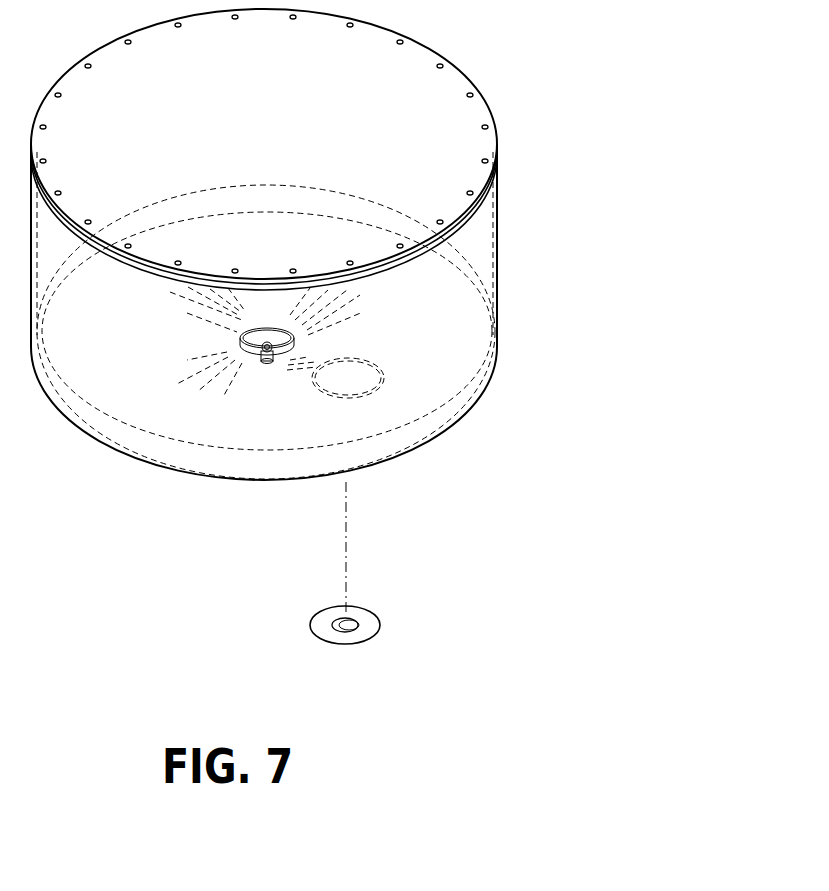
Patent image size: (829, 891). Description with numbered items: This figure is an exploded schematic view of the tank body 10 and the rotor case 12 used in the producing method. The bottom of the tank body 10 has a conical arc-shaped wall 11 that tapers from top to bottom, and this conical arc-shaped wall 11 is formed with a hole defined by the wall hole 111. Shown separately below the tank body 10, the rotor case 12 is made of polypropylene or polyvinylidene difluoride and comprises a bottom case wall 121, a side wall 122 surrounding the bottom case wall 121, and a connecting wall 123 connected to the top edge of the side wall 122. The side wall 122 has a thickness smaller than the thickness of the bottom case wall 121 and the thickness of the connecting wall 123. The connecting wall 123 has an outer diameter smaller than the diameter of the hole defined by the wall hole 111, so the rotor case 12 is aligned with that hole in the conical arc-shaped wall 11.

The tank body 10 is at (497, 220).
The conical arc-shaped wall 11 is at (442, 350).
The wall hole 111 is at (382, 388).
The rotor case 12 is at (424, 563).
The bottom case wall 121 is at (355, 623).
The side wall 122 is at (350, 620).
The connecting wall 123 is at (366, 627).